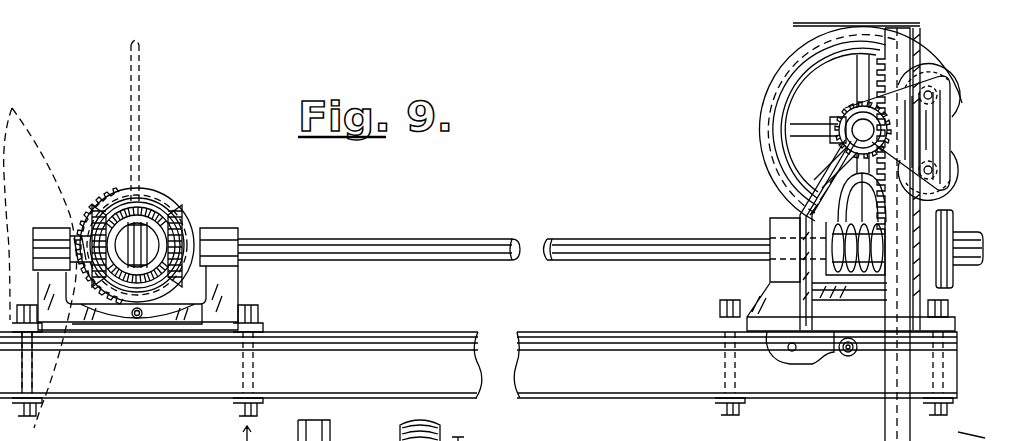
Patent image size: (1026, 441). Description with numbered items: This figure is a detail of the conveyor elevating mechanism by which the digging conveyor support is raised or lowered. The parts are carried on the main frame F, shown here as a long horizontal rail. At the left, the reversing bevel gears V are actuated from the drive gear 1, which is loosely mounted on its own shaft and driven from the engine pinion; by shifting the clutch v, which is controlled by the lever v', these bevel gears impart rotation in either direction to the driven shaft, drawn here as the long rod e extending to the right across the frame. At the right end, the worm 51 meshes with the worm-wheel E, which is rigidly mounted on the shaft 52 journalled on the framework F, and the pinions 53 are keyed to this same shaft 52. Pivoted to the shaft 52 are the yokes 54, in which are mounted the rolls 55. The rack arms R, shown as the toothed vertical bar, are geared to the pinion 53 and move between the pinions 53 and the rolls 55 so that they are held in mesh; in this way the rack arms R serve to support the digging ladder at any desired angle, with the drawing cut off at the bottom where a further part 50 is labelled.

The gear 1 is at (37, 157).
The clutch v is at (134, 205).
The lever v' is at (153, 123).
The reversing bevel gears V is at (207, 222).
The shaft e is at (568, 238).
The main frame F is at (478, 356).
The worm-wheel E is at (770, 88).
The worm 51 is at (852, 207).
The shaft 52 is at (858, 124).
The pinions 53 is at (838, 128).
The yokes 54 is at (932, 126).
The rolls 55 is at (942, 72).
The rack arms R is at (916, 421).
The lever 50 is at (992, 435).